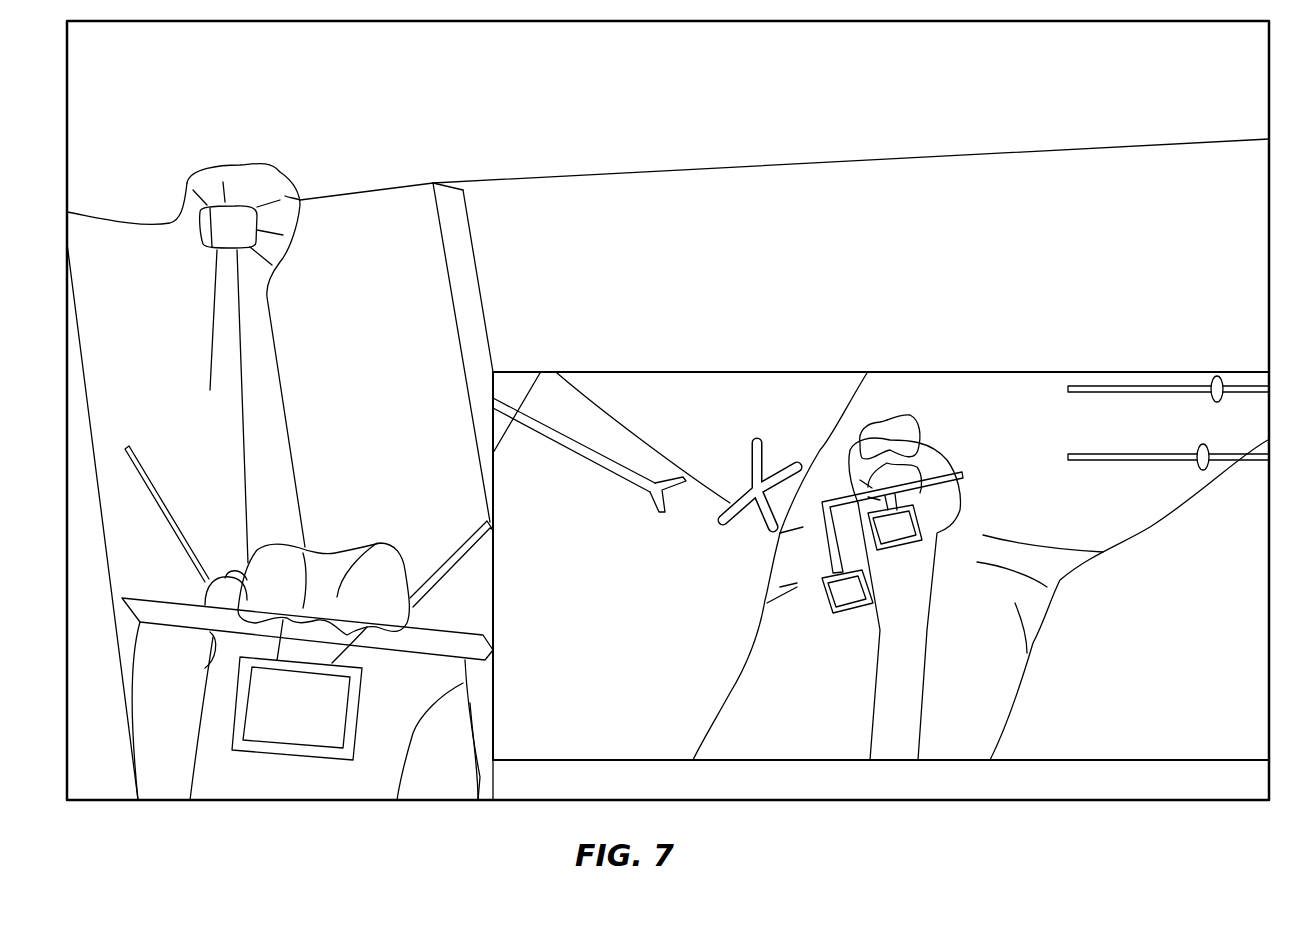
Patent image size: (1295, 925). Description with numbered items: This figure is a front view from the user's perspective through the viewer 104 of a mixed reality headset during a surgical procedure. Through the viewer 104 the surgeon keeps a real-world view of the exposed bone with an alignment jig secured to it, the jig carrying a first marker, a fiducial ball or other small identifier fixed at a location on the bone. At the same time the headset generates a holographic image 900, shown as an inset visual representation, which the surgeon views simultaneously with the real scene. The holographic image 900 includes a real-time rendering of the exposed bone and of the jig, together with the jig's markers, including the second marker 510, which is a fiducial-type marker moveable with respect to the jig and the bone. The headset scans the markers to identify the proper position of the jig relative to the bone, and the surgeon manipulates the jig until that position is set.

The viewer 104 is at (958, 130).
The holographic image 900 is at (829, 361).
The second marker 510 is at (828, 615).